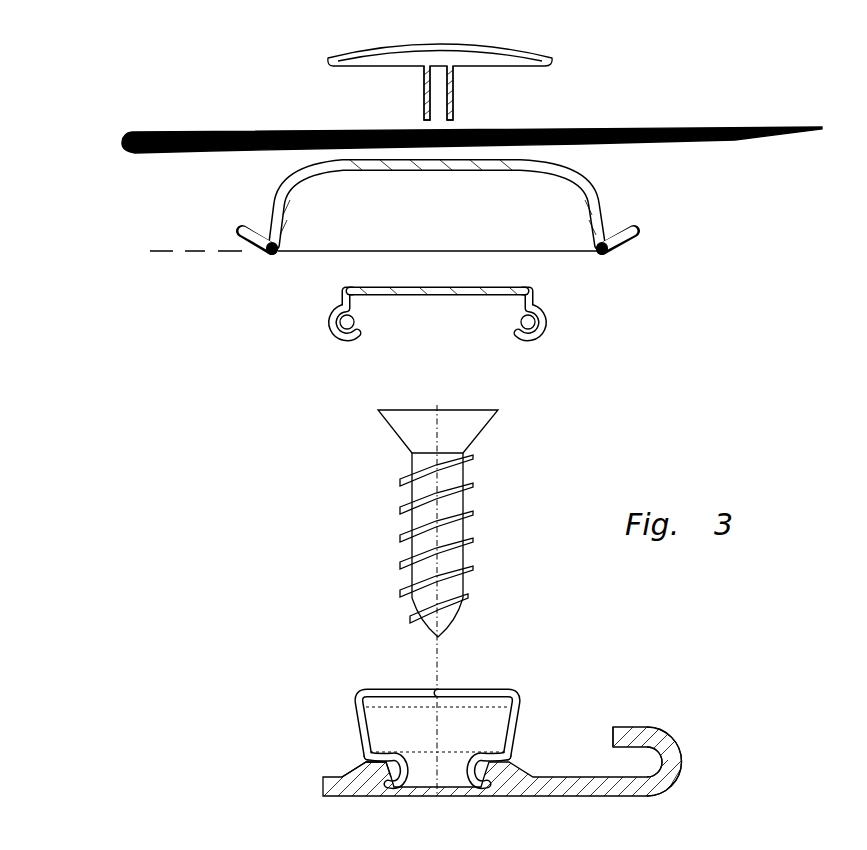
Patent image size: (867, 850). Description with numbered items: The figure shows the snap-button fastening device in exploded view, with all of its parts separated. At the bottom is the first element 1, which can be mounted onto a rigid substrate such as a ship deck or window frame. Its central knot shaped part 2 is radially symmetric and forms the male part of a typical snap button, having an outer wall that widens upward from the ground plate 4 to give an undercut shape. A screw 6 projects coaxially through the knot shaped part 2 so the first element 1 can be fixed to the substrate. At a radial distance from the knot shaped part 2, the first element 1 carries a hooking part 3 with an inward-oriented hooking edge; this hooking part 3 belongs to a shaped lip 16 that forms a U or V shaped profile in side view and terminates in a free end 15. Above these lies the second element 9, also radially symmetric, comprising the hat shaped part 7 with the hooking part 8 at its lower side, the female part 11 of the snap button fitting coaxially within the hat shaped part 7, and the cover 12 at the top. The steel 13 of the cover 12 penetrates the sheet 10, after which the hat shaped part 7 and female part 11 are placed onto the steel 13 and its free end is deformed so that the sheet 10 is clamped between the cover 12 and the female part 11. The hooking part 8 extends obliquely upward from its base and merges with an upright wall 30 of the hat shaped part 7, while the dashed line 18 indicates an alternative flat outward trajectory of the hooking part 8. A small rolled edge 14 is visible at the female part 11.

The first element 1 is at (222, 678).
The knot shaped part 2 is at (525, 690).
The hooking part 3 is at (650, 703).
The ground plate 4 is at (325, 807).
The screw 6 is at (370, 512).
The hat shaped part 7 is at (642, 180).
The hooking part 8 is at (637, 247).
The second element 9 is at (122, 82).
The sheet 10 is at (705, 117).
The female part 11 is at (573, 313).
The cover 12 is at (323, 40).
The steel 13 is at (460, 117).
The rolled edge 14 is at (360, 322).
The free end 15 is at (605, 735).
The shaped lip 16 is at (685, 752).
The dashed line 18 is at (198, 262).
The upright wall 30 is at (272, 195).